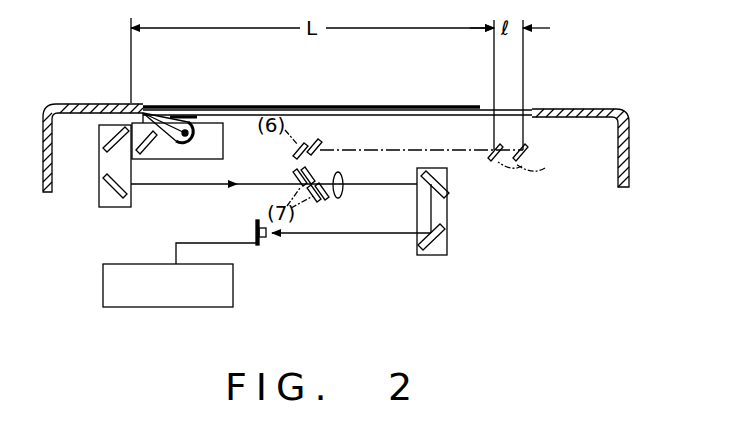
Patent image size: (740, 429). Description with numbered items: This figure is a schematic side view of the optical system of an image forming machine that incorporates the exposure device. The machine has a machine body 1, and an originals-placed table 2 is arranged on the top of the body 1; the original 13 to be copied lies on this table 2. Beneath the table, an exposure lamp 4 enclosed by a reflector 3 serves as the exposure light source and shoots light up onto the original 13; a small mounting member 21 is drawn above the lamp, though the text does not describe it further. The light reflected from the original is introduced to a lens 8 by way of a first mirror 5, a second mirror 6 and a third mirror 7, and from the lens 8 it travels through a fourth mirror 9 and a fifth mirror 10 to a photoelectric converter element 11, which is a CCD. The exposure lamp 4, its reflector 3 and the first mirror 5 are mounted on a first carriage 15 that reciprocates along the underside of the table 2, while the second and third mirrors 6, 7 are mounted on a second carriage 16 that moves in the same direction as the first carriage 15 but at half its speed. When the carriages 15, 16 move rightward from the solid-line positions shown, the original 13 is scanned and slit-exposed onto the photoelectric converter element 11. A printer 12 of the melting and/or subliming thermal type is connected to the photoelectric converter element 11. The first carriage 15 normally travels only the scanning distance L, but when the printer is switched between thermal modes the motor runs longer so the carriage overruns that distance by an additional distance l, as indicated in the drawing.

The machine body 1 is at (630, 130).
The originals-placed table 2 is at (248, 108).
The reflector 3 is at (184, 146).
The exposure lamp 4 is at (198, 126).
The first mirror 5 is at (145, 162).
The second mirror 6 is at (99, 160).
The third mirror 7 is at (112, 207).
The lens 8 is at (345, 193).
The fourth mirror 9 is at (448, 198).
The fifth mirror 10 is at (431, 255).
The photoelectric converter element 11 is at (262, 247).
The printer 12 is at (104, 307).
The original 13 is at (378, 105).
The first carriage 15 is at (259, 162).
The second carriage 16 is at (101, 128).
The bracket 21 is at (186, 116).